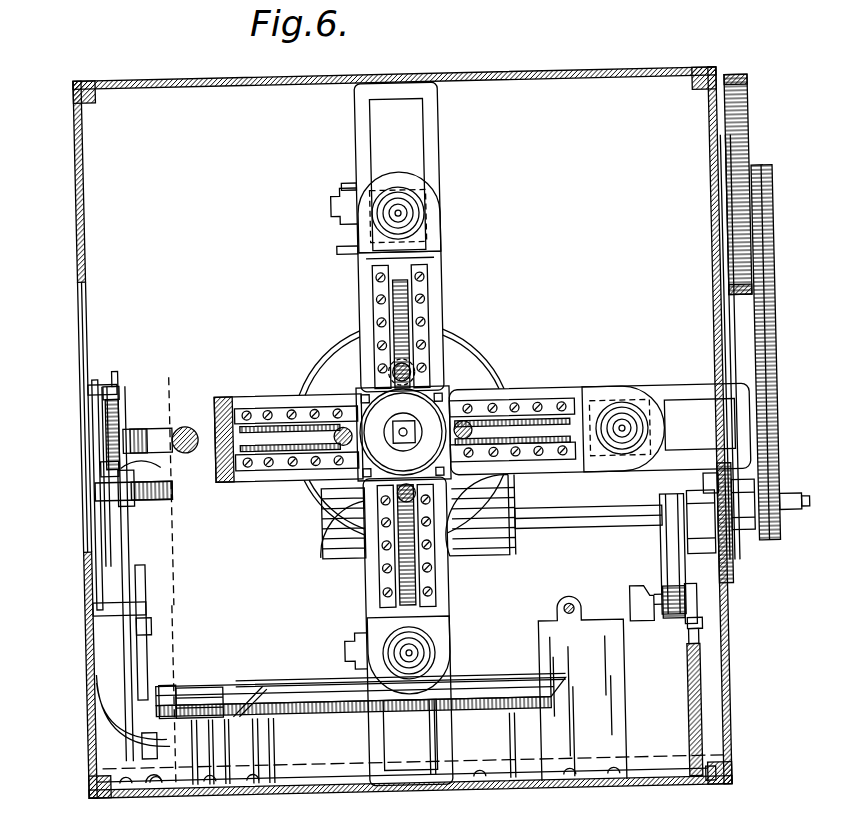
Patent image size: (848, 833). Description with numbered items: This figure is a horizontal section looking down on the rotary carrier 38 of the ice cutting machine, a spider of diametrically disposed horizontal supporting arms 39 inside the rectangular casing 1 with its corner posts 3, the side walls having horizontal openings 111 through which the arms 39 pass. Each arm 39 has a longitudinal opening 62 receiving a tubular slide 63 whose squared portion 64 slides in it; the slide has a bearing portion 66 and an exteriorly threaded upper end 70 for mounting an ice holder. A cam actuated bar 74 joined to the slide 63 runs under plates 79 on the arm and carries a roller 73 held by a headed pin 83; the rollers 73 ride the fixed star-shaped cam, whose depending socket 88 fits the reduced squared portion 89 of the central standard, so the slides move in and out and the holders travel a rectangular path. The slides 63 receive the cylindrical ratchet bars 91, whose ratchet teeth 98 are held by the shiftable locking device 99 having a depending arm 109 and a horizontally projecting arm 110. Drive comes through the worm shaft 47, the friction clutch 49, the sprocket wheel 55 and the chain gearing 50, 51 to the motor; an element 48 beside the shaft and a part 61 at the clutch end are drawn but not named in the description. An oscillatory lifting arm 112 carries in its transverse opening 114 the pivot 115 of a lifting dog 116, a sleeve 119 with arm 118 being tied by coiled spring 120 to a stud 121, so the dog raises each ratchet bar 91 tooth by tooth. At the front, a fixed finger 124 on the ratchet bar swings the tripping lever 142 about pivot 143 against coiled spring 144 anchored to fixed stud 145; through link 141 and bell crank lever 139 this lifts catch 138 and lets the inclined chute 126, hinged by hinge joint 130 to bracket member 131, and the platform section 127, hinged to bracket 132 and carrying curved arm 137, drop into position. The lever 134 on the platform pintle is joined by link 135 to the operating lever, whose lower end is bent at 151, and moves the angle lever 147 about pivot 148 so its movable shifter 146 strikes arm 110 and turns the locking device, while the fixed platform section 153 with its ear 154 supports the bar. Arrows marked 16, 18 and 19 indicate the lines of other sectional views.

The rectangular casing 1 is at (577, 63).
The corner posts 3 is at (708, 72).
The chain gearing 51 is at (746, 76).
The chain gearing 50 is at (762, 310).
The horizontal openings 111 is at (722, 330).
The horizontal supporting arms 39 is at (440, 160).
The longitudinal openings 62 is at (418, 123).
The tubular slides 63 is at (430, 215).
The squared portions 64 is at (392, 183).
The cylindrical ratchet bars 91 is at (403, 212).
The exteriorly threaded upper ends 70 is at (375, 225).
The bearing portion 66 is at (425, 235).
The depending arm 109 is at (352, 185).
The shiftable locking device 99 is at (345, 200).
The horizontally projecting arm 110 is at (362, 258).
The plates 79 is at (375, 290).
The cam actuated bars 74 is at (408, 300).
The rollers 73 is at (410, 372).
The headed pin 83 is at (405, 370).
The depending socket 88 is at (403, 430).
The reduced squared portion 89 is at (403, 440).
The rotary carrier 38 is at (360, 500).
The shoulder 48 is at (505, 487).
The worm shaft 47 is at (560, 522).
The friction clutch 49 is at (640, 510).
The oscillatory lifting arm 112 is at (665, 572).
The sprocket wheel 55 is at (742, 540).
The bolt 61 is at (790, 502).
The coiled spring 120 is at (700, 683).
The fixed platform section 153 is at (615, 700).
The ear 154 is at (568, 605).
The lifting dog 116 is at (630, 605).
The pivot of lifting dog 115 is at (668, 628).
The transverse opening 114 is at (683, 655).
The sleeve 119 is at (700, 612).
The arm 118 is at (700, 628).
The stud 121 is at (700, 778).
The section line 18 is at (756, 768).
The section line 16 is at (86, 758).
The hinge joint 130 is at (262, 718).
The inclined chute 126 is at (303, 686).
The curved arm 137 is at (242, 700).
The bracket member 131 is at (290, 790).
The bracket 132 is at (145, 792).
The section line 19 is at (165, 360).
The link 141 is at (95, 520).
The link 135 is at (100, 555).
The fixed stud 145 is at (102, 385).
The coiled spring 144 is at (100, 410).
The fixed finger 124 is at (172, 380).
The angularly bent lower end 151 is at (100, 460).
The ratchet teeth 98 is at (158, 468).
The tripping lever 142 is at (175, 488).
The pivot 143 is at (125, 505).
The movable shifter 146 is at (143, 580).
The angle lever 147 is at (148, 625).
The pivot 148 is at (135, 612).
The bell crank lever 139 is at (140, 652).
The horizontal platform section 127 is at (170, 686).
The catch 138 is at (90, 675).
The lever 134 is at (150, 735).